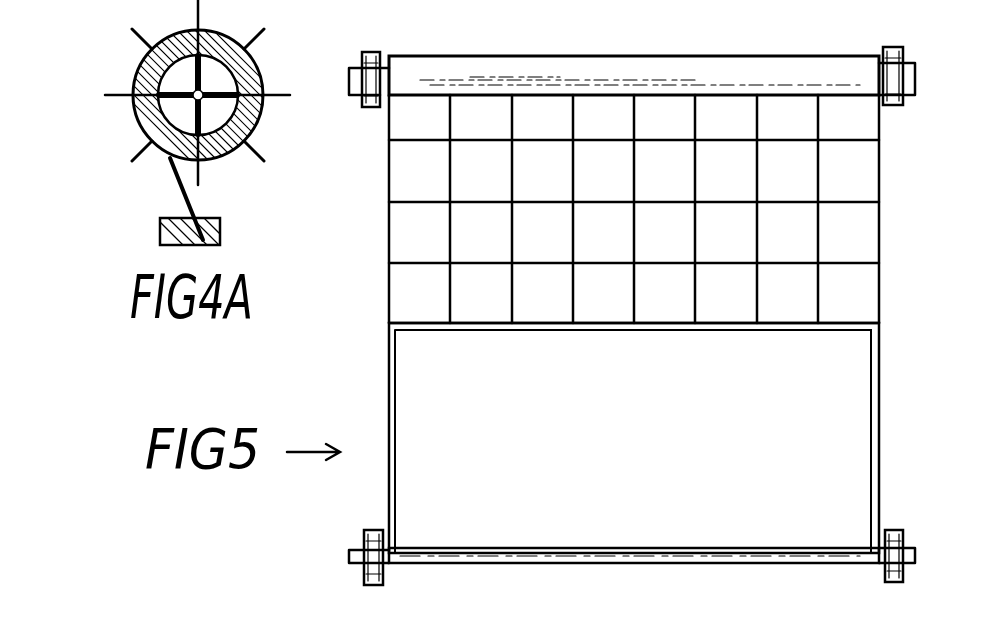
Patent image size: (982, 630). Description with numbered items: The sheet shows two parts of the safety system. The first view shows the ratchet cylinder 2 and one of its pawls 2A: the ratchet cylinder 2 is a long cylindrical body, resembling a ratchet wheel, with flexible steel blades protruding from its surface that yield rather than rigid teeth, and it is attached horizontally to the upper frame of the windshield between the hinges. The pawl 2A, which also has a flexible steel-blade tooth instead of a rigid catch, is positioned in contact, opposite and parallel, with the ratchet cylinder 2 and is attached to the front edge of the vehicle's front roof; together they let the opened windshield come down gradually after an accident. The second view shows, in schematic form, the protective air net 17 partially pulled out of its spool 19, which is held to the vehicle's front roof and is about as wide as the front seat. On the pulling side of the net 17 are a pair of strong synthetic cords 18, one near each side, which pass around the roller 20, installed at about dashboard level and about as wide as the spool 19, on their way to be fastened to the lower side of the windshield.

In FIG. 4A, the ratchet cylinder 2 is at (135, 60).
In FIG. 4A, the pawl 2A is at (165, 205).
In FIG. 5, the protective air net 17 is at (389, 183).
In FIG. 5, the cords 18 is at (383, 355).
In FIG. 5, the spool 19 is at (354, 62).
In FIG. 5, the roller 20 is at (362, 540).